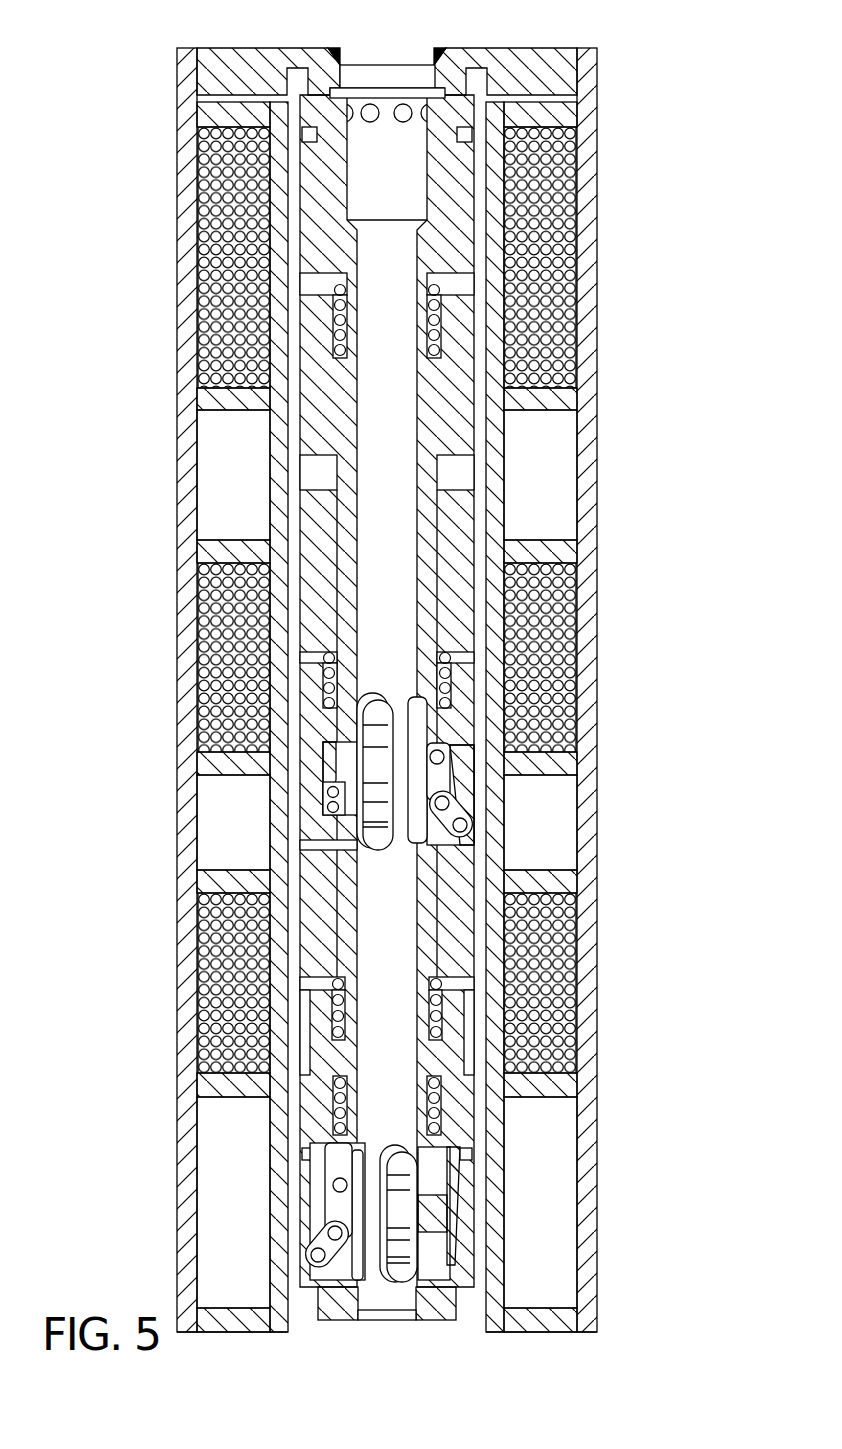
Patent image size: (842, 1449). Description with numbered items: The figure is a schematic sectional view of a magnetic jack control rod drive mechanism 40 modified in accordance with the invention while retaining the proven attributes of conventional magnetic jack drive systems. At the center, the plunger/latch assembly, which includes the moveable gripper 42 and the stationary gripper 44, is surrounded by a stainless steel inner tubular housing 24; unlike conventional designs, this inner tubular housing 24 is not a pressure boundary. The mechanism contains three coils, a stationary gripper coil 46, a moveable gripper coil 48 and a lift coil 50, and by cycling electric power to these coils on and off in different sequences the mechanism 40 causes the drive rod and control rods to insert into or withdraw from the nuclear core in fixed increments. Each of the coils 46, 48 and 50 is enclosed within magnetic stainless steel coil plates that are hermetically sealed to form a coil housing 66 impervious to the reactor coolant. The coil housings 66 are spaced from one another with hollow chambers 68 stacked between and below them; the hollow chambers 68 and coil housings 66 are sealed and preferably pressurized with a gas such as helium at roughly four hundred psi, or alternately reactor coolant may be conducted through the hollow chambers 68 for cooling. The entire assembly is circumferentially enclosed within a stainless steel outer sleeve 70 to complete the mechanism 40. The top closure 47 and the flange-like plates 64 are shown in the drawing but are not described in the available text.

The inner tubular housing 24 is at (478, 216).
The control rod drive mechanism 40 is at (630, 363).
The moveable gripper 42 is at (447, 777).
The stationary gripper 44 is at (330, 1210).
The stationary gripper coil 46 is at (197, 1027).
The top valve / closure 47 is at (400, 55).
The moveable gripper coil 48 is at (200, 653).
The lift coil 50 is at (212, 287).
The coil flange 64 is at (190, 135).
The coil housing 66 is at (190, 357).
The hollow chamber 68 is at (207, 510).
The outer sleeve 70 is at (195, 193).